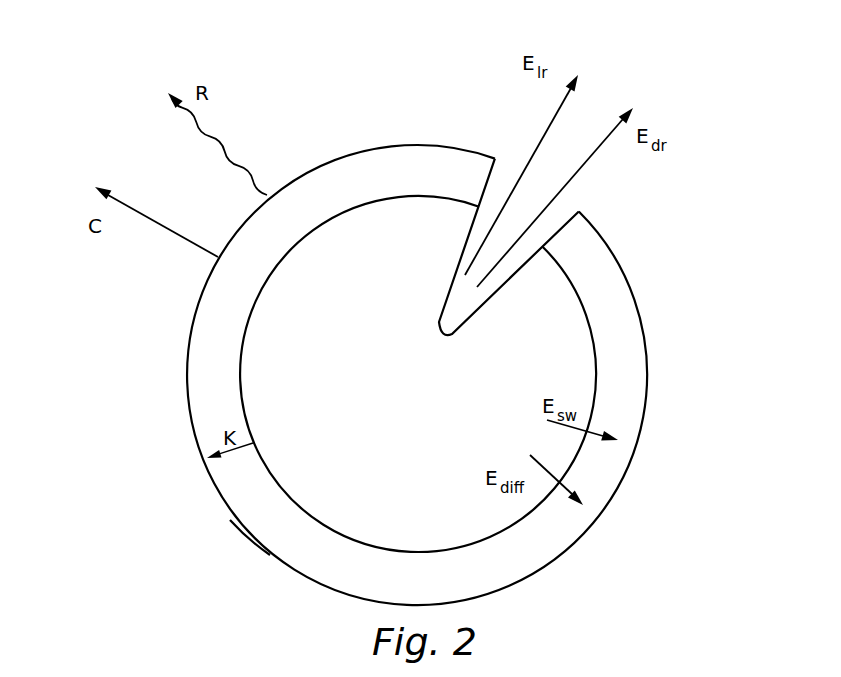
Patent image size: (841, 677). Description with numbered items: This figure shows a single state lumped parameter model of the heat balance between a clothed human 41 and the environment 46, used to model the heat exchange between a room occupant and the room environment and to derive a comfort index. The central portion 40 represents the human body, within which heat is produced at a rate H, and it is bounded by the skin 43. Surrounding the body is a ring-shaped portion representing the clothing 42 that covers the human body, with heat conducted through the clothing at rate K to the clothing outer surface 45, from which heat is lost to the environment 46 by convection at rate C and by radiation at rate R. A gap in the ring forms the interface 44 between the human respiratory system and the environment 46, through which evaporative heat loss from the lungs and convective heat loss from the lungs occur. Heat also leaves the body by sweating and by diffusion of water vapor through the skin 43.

The human body 40 is at (425, 489).
The clothed human 41 is at (395, 375).
The clothing 42 is at (645, 380).
The skin 43 is at (272, 275).
The interface between the human respiratory system and the environment 44 is at (560, 212).
The clothing outer surface 45 is at (270, 555).
The environment 46 is at (713, 270).